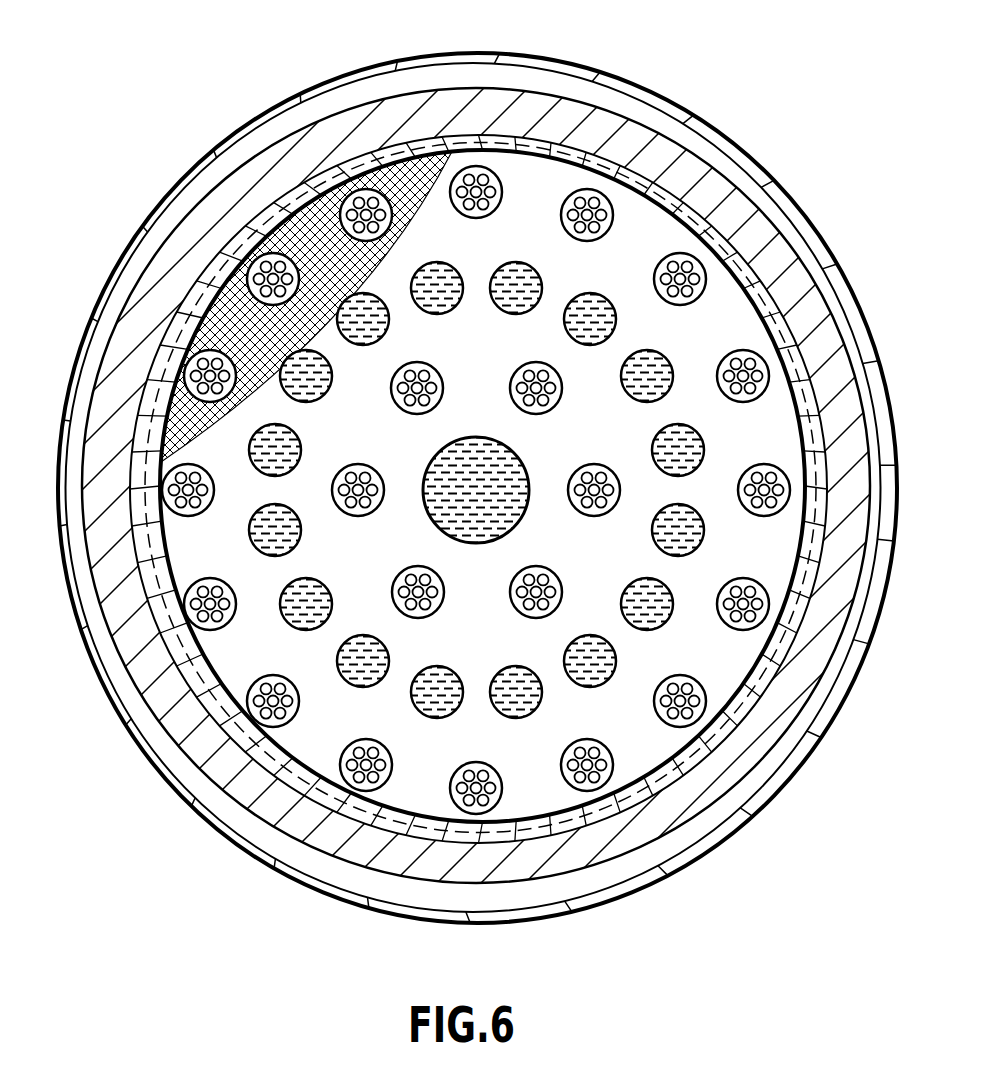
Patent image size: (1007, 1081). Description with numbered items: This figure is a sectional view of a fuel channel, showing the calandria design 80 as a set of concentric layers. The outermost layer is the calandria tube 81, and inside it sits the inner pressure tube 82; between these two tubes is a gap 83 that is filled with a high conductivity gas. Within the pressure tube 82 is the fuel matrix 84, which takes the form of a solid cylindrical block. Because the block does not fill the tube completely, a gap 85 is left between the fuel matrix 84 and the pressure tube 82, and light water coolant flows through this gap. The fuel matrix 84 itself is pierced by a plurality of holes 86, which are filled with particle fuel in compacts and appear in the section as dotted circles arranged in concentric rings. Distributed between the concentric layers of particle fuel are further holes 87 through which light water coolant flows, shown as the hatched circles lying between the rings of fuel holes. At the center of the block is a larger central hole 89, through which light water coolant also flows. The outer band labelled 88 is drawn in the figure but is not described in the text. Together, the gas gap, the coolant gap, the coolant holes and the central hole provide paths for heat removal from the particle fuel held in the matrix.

The calandria design 80 is at (740, 104).
The calandria tube 81 is at (777, 194).
The inner pressure tube 82 is at (140, 300).
The gap 83 is at (195, 203).
The fuel matrix 84 is at (392, 254).
The gap 85 is at (567, 162).
The holes 86 is at (203, 515).
The holes 87 is at (510, 310).
The armor tape 88 is at (515, 72).
The central hole 89 is at (482, 437).